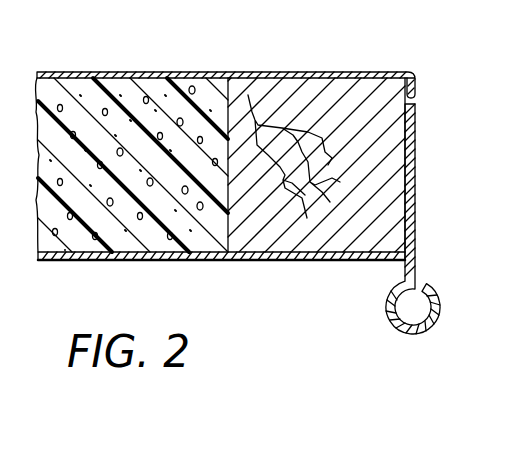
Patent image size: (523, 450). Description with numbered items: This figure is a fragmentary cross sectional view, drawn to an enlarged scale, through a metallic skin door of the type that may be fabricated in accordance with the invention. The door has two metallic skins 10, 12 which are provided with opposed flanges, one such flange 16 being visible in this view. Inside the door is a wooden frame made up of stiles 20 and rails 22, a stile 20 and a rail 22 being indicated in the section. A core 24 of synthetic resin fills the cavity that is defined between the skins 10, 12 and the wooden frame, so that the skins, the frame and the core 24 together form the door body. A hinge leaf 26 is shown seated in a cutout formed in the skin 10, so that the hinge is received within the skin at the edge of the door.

The metallic skin 10 is at (261, 263).
The metallic skin 12 is at (203, 71).
The flange 16 is at (414, 96).
The stile 20 is at (345, 103).
The rail 22 is at (48, 0).
The core 24 is at (38, 113).
The hinge leaf 26 is at (416, 193).